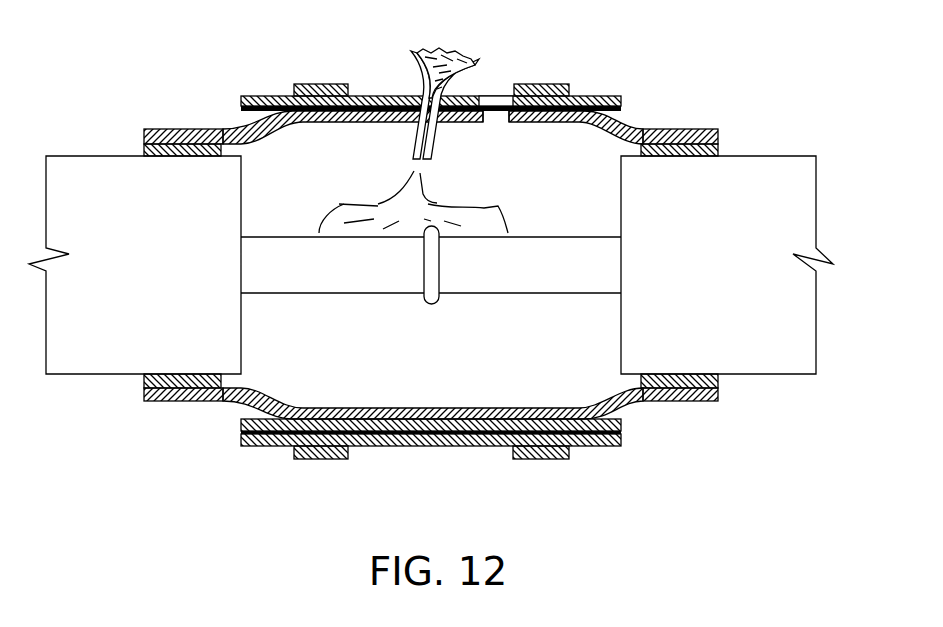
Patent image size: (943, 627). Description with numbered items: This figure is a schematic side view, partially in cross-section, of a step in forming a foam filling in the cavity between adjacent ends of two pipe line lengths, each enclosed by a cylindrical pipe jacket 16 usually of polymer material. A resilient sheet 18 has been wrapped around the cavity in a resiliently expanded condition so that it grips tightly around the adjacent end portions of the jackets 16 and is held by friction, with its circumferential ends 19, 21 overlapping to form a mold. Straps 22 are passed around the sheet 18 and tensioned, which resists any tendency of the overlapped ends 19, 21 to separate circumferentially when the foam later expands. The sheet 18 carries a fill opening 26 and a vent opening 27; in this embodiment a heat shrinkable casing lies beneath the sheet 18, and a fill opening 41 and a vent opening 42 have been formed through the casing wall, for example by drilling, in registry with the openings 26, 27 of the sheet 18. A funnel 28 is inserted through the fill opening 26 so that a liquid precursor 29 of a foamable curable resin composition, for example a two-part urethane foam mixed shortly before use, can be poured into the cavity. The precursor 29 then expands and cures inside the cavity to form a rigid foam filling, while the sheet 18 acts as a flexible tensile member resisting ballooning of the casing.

The cylindrical pipe jacket 16 is at (97, 168).
The resilient sheet 18 is at (273, 93).
The end of the sheet 19 is at (400, 444).
The end of the sheet 21 is at (463, 445).
The straps 22 is at (323, 458).
The fill opening 26 is at (413, 94).
The vent opening 27 is at (506, 98).
The funnel 28 is at (472, 62).
The liquid precursor 29 is at (417, 200).
The fill opening 41 is at (417, 92).
The vent opening 42 is at (497, 114).